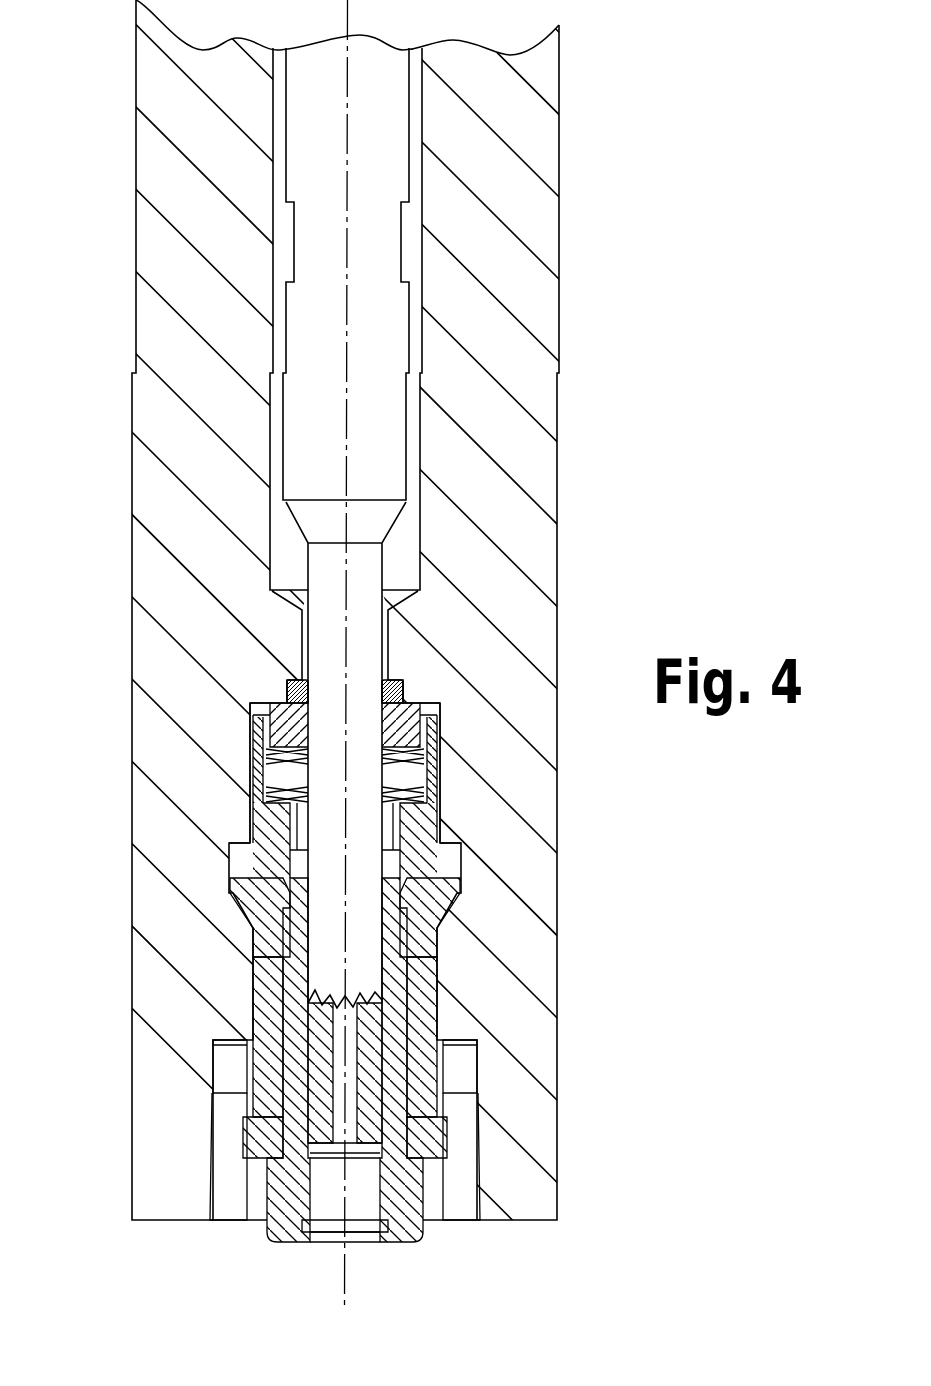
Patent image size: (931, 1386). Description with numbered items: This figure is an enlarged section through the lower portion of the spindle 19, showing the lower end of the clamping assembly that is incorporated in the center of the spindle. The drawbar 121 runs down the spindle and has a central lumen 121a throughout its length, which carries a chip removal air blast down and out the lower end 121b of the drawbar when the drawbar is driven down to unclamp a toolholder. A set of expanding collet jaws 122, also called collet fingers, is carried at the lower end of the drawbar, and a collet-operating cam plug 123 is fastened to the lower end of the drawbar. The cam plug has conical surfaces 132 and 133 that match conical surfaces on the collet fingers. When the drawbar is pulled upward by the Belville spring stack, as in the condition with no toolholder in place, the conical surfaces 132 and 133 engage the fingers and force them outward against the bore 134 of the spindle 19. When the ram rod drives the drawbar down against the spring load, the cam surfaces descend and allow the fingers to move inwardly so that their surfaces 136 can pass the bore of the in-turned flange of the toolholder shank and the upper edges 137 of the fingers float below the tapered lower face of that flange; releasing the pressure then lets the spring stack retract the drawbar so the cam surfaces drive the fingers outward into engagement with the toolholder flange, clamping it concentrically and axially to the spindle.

The spindle 19 is at (547, 875).
The drawbar 121 is at (377, 364).
The central lumen 121a is at (284, 1032).
The lower end of the drawbar 121b is at (341, 1148).
The expanding collet jaws 122 is at (258, 1063).
The collet-operating cam plug 123 is at (460, 1223).
The conical surface of the cam plug 132 is at (397, 1195).
The conical surface of the cam plug 133 is at (425, 932).
The bore of the spindle 134 is at (438, 1018).
The surfaces of the collet fingers 136 is at (413, 1142).
The upper edges of the fingers 137 is at (473, 1103).